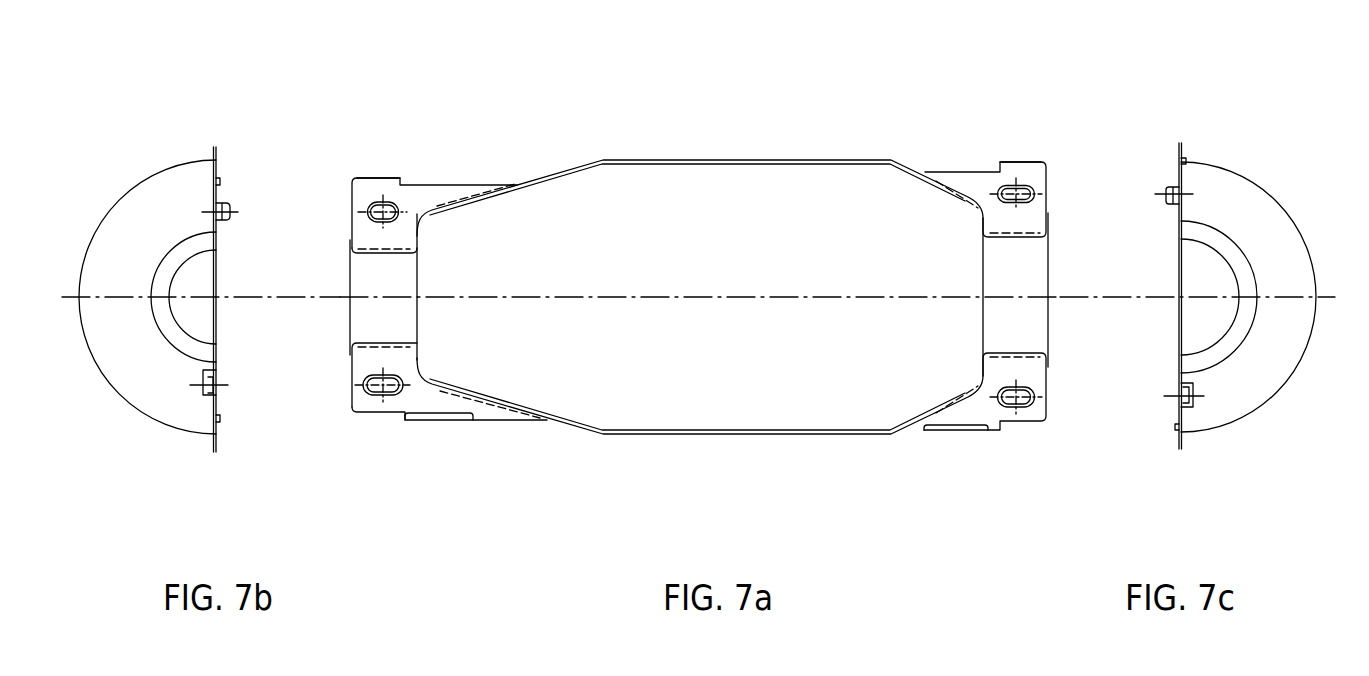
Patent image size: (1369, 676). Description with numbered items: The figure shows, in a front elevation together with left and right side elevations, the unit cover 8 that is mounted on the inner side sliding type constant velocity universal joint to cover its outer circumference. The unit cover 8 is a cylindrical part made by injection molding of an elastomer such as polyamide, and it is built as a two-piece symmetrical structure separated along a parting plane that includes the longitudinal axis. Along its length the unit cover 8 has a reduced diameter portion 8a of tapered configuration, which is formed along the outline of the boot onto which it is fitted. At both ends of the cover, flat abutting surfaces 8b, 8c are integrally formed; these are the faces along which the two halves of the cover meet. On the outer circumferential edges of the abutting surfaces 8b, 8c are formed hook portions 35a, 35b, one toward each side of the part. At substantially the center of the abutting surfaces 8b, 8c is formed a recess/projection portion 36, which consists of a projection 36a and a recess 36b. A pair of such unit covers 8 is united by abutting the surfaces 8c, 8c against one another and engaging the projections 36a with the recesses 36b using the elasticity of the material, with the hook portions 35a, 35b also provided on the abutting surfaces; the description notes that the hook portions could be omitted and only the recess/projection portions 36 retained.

In FIG. 7a, the unit cover 8 is at (734, 271).
In FIG. 7b, the reduced diameter portion 8a is at (124, 222).
In FIG. 7a, the reduced diameter portion 8a is at (548, 196).
In FIG. 7c, the reduced diameter portion 8a is at (1248, 297).
In FIG. 7a, the flat abutting surface 8b is at (944, 413).
In FIG. 7c, the flat abutting surface 8b is at (1191, 157).
In FIG. 7b, the flat abutting surface 8c is at (206, 200).
In FIG. 7a, the flat abutting surface 8c is at (432, 183).
In FIG. 7b, the hook portion 35a is at (217, 165).
In FIG. 7c, the hook portion 35a is at (1178, 157).
In FIG. 7b, the hook portion 35b is at (217, 435).
In FIG. 7c, the hook portion 35b is at (1173, 431).
In FIG. 7b, the recess/projection portion 36 is at (284, 238).
In FIG. 7c, the recess/projection portion 36 is at (1112, 240).
In FIG. 7b, the projection 36a is at (233, 215).
In FIG. 7c, the projection 36a is at (1106, 240).
In FIG. 7b, the recess 36b is at (219, 363).
In FIG. 7c, the recess 36b is at (1108, 319).